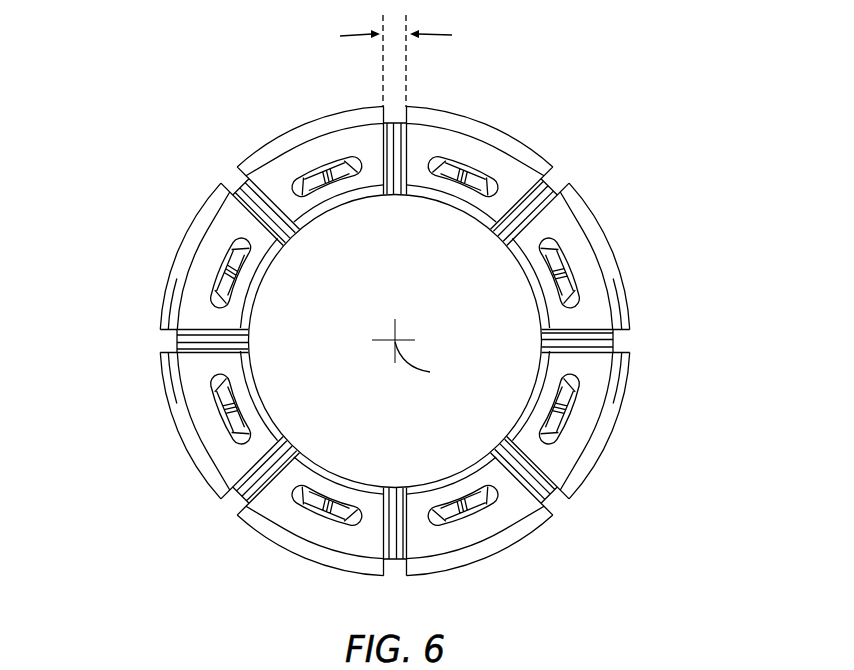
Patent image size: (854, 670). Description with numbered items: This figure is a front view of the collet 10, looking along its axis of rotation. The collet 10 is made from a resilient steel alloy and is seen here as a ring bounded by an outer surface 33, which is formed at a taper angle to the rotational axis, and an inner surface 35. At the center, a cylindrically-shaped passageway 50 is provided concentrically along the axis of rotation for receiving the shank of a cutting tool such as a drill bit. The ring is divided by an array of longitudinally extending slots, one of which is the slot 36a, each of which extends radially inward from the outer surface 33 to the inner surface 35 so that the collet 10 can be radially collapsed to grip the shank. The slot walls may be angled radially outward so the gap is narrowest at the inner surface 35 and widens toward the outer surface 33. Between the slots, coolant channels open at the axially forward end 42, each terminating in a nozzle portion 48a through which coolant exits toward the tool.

The collet 10 is at (657, 153).
The outer surface 33 is at (438, 111).
The inner surface 35 is at (450, 200).
The slot 36a is at (230, 180).
The axially forward end 42 is at (596, 317).
The nozzle portion 48a is at (203, 406).
The passageway 50 is at (489, 334).